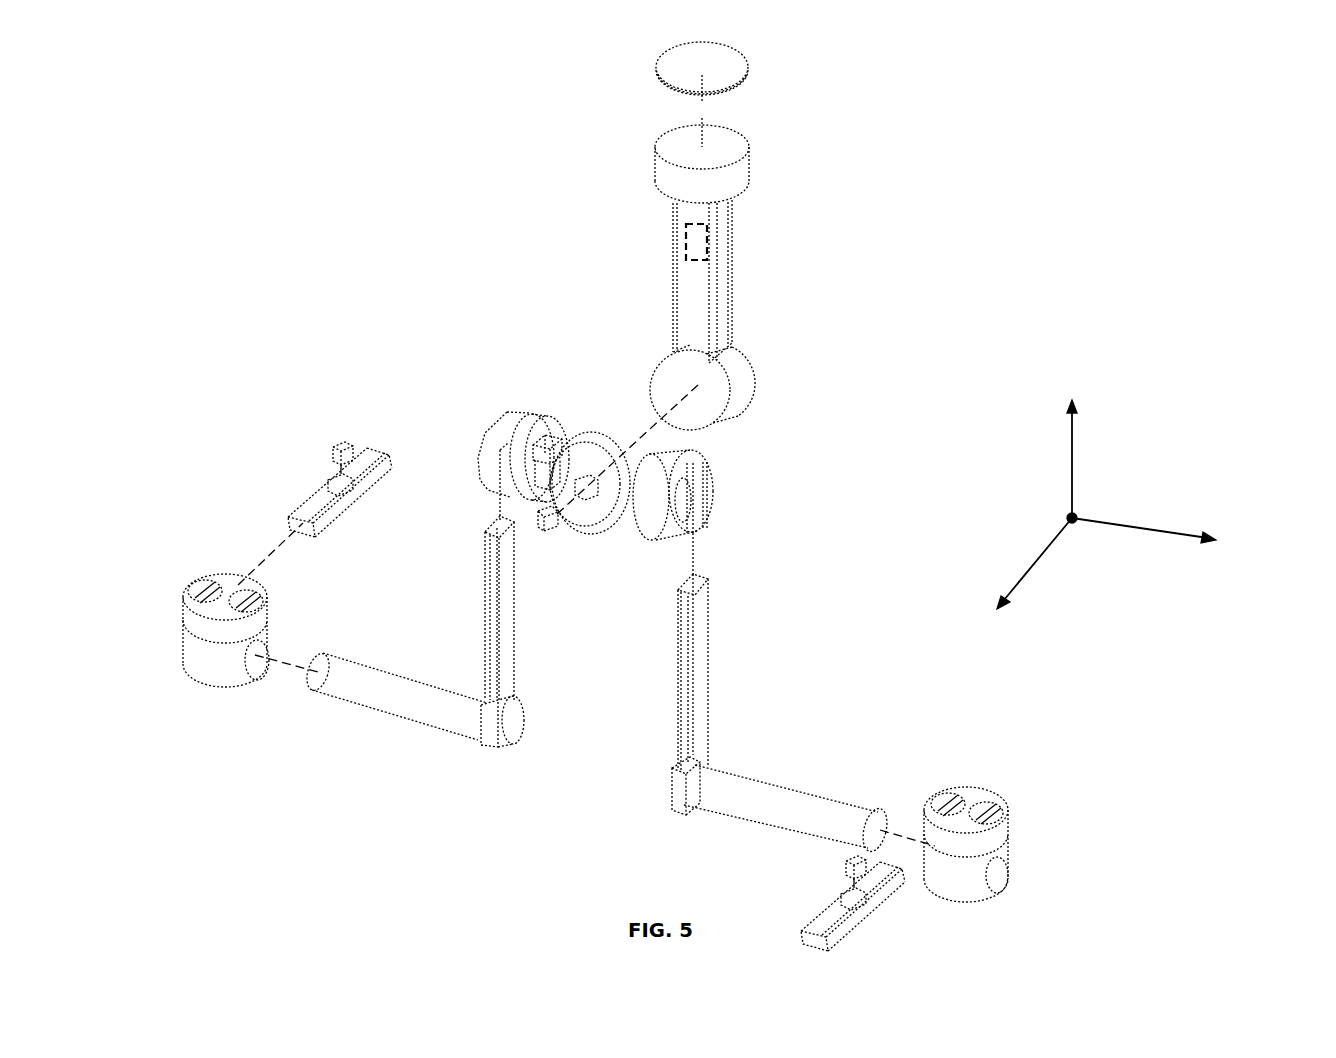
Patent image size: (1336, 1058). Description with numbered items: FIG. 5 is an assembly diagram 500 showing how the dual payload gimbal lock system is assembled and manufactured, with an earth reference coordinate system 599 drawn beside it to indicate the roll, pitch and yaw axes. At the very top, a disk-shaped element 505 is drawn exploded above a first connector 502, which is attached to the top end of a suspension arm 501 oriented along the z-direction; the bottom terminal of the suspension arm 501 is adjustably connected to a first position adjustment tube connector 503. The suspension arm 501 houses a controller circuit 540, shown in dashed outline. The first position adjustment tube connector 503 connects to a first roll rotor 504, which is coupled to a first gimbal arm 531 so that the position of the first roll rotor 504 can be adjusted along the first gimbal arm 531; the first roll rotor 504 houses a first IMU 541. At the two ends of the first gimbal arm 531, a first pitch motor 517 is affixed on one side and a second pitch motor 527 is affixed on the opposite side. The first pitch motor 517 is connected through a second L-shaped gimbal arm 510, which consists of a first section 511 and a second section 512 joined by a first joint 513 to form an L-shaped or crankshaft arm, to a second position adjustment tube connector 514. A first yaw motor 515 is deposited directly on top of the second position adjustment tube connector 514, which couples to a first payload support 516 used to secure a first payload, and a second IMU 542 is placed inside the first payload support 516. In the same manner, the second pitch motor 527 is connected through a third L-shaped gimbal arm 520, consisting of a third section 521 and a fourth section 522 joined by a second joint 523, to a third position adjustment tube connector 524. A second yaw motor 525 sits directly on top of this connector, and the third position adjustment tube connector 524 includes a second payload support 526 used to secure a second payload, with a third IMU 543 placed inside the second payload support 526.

The assembly diagram 500 is at (996, 194).
The suspension arm 501 is at (727, 300).
The first connector 502 is at (747, 168).
The first position adjustment tube connector 503 is at (740, 387).
The first roll rotor 504 is at (603, 438).
The top disk 505 is at (743, 68).
The second L-shaped gimbal arm 510 is at (902, 752).
The first section 511 is at (698, 683).
The second section 512 is at (780, 793).
The first joint 513 is at (677, 800).
The second position adjustment tube connector 514 is at (998, 868).
The first yaw motor 515 is at (1003, 825).
The first payload support 516 is at (887, 897).
The first pitch motor 517 is at (673, 460).
The third L-shaped gimbal arm 520 is at (243, 736).
The third section 521 is at (500, 623).
The fourth section 522 is at (368, 697).
The second joint 523 is at (492, 740).
The third position adjustment tube connector 524 is at (197, 662).
The second yaw motor 525 is at (192, 617).
The second payload support 526 is at (332, 518).
The second pitch motor 527 is at (488, 463).
The first gimbal arm 531 is at (557, 440).
The controller circuit 540 is at (687, 243).
The first IMU 541 is at (542, 530).
The second IMU 542 is at (848, 868).
The third IMU 543 is at (333, 454).
The earth reference coordinates 599 is at (1216, 385).